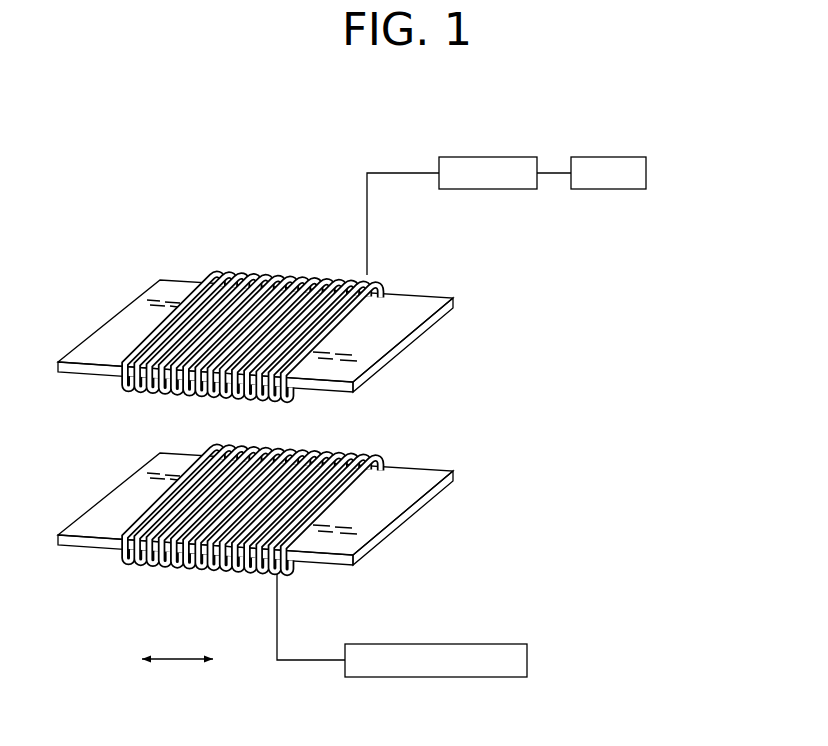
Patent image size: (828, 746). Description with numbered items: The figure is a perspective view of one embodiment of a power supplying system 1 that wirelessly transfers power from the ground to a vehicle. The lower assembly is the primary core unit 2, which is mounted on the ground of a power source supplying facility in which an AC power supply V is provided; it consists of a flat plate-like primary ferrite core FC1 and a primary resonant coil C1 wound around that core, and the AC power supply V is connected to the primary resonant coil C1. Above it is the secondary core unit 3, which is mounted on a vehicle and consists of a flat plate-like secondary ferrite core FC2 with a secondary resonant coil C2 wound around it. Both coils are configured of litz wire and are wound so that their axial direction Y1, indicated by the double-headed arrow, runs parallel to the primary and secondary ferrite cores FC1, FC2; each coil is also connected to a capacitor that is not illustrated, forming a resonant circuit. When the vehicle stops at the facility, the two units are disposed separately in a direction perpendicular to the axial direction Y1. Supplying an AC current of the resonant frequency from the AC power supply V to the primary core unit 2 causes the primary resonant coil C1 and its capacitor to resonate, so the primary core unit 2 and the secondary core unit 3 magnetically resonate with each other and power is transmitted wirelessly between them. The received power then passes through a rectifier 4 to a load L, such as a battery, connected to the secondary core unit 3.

The power supplying system 1 is at (423, 137).
The primary core unit 2 is at (255, 541).
The secondary core unit 3 is at (255, 293).
The rectifier 4 is at (488, 157).
The load L is at (608, 157).
The AC power supply V is at (407, 643).
The primary resonant coil C1 is at (247, 563).
The secondary resonant coil C2 is at (323, 277).
The primary ferrite core FC1 is at (101, 512).
The secondary ferrite core FC2 is at (165, 288).
The axial direction Y1 is at (180, 661).